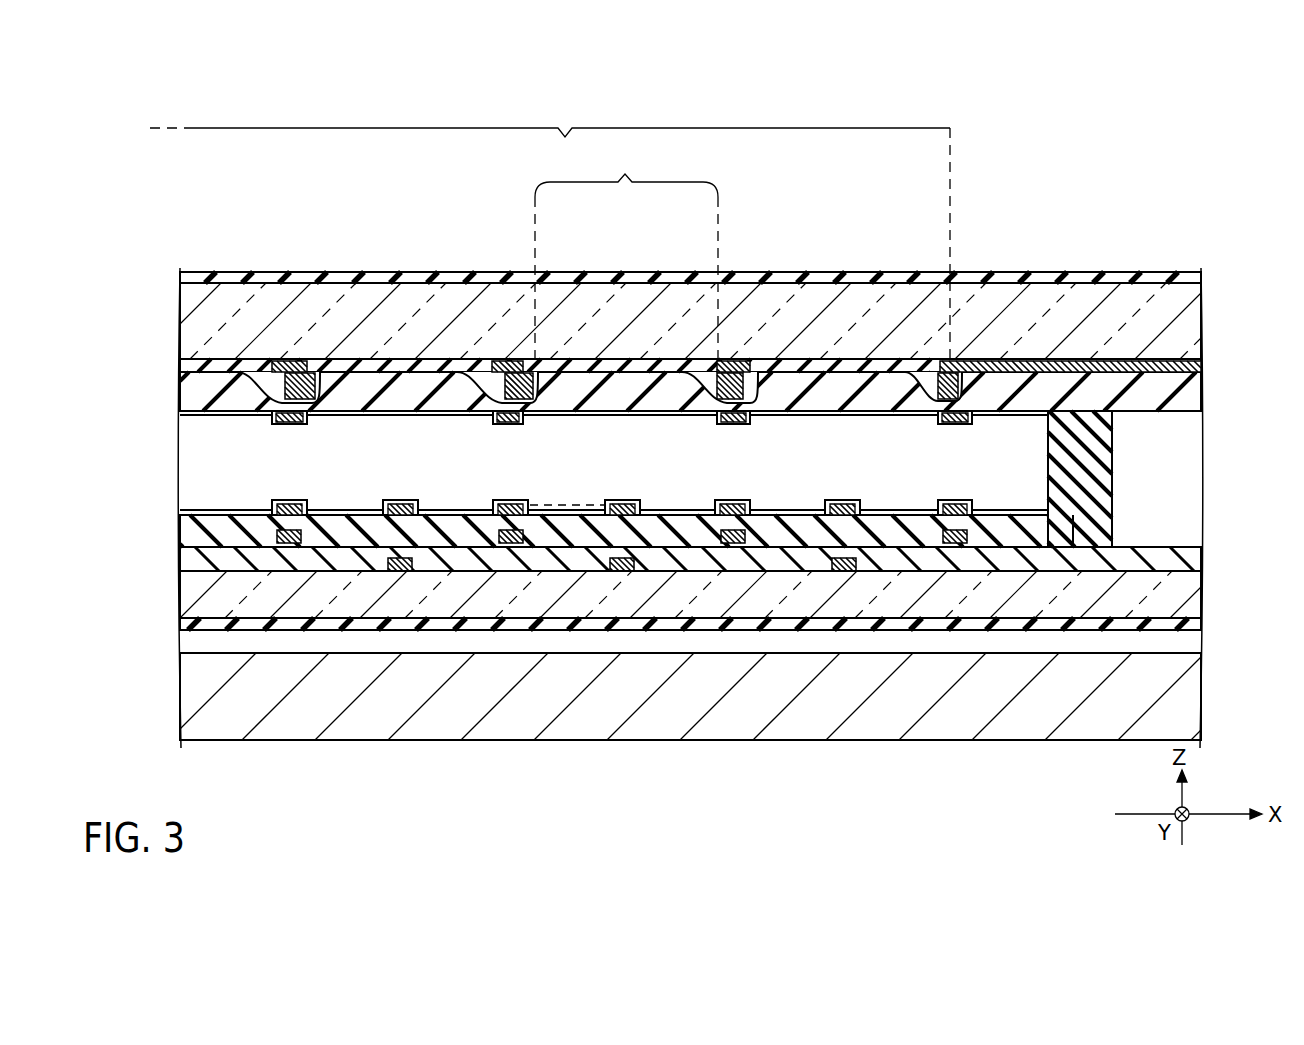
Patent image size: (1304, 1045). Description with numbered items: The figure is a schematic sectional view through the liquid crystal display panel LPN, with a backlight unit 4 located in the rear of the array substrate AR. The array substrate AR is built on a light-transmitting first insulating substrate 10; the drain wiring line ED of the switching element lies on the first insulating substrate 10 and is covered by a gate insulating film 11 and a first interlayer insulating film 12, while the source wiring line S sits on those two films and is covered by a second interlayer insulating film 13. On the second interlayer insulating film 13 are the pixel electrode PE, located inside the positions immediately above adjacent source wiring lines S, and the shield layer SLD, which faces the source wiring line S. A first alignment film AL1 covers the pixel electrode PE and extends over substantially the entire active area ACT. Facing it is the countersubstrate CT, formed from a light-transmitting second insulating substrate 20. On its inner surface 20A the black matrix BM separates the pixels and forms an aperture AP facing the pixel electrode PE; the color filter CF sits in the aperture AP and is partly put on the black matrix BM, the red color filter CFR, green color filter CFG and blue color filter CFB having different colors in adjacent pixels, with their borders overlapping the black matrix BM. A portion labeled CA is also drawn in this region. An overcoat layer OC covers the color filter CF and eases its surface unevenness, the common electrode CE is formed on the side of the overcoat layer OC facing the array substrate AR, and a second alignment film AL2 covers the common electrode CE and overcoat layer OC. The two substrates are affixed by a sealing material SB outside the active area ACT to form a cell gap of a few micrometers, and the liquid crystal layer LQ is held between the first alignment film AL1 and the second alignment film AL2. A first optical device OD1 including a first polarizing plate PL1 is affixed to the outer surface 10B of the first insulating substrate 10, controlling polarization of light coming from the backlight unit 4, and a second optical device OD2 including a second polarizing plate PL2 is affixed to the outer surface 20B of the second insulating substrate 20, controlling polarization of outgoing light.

The active area ACT is at (550, 227).
The aperture AP is at (626, 254).
The outer surface of the second insulating substrate 20B is at (225, 272).
The second optical device OD2 is at (184, 277).
The second polarizing plate PL2 is at (643, 287).
The countersubstrate CT is at (180, 330).
The second insulating substrate 20 is at (1192, 312).
The liquid crystal display panel LPN is at (1205, 293).
The color filter CF is at (182, 366).
The red color filter CFR is at (243, 365).
The green color filter CFG is at (400, 365).
The blue color filter CFB is at (606, 365).
The black matrix BM is at (288, 362).
The overlap portion of color filters CA is at (305, 376).
The overcoat layer OC is at (1192, 398).
The inner surface of the second insulating substrate 20A is at (185, 376).
The common electrode CE is at (268, 413).
The second alignment film AL2 is at (1045, 414).
The liquid crystal layer LQ is at (185, 500).
The first alignment film AL1 is at (1045, 513).
The first interlayer insulating film 12 is at (1192, 538).
The second interlayer insulating film 13 is at (984, 522).
The shield layer SLD is at (290, 505).
The pixel electrode PE is at (402, 505).
The source wiring line S is at (288, 545).
The drain wiring line ED is at (400, 572).
The gate insulating film 11 is at (1192, 560).
The first insulating substrate 10 is at (1192, 589).
The array substrate AR is at (180, 590).
The first optical device OD1 is at (232, 630).
The first polarizing plate PL1 is at (643, 634).
The outer surface of the first insulating substrate 10B is at (238, 632).
The backlight unit 4 is at (190, 703).
The sealing material SB is at (1100, 462).